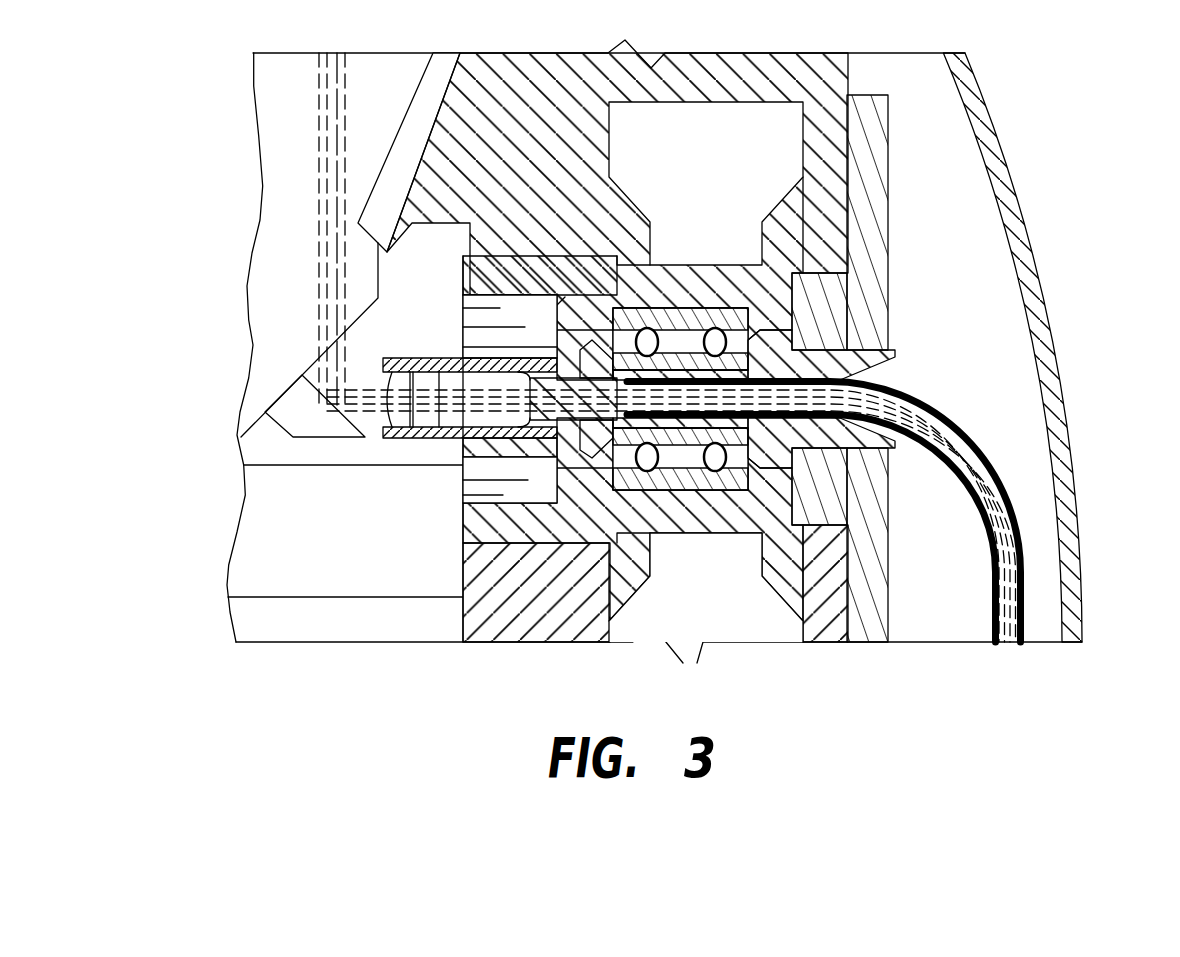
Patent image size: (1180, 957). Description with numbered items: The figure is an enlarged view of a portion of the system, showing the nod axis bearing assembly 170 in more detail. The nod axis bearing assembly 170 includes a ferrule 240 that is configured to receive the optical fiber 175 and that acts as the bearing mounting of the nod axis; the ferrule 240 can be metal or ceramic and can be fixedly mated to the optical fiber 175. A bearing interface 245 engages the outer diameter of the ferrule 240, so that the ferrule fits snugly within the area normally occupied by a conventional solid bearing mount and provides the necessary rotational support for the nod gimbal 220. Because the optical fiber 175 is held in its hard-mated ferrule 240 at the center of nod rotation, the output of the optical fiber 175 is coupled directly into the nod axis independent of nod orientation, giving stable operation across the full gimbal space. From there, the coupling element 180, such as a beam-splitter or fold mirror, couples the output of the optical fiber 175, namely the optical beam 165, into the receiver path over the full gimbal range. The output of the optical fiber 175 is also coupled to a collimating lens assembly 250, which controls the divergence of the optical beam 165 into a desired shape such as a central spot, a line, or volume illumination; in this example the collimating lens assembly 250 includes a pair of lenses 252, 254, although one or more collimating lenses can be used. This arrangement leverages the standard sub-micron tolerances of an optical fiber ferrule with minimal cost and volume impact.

The optical beam 165 is at (319, 167).
The nod axis bearing assembly 170 is at (719, 248).
The optical fiber 175 is at (1027, 598).
The coupling element 180 is at (278, 428).
The nod gimbal 220 is at (463, 278).
The ferrule 240 is at (893, 355).
The bearing interface 245 is at (677, 533).
The collimating lens assembly 250 is at (384, 359).
The lens 252 is at (383, 420).
The lens 254 is at (425, 424).